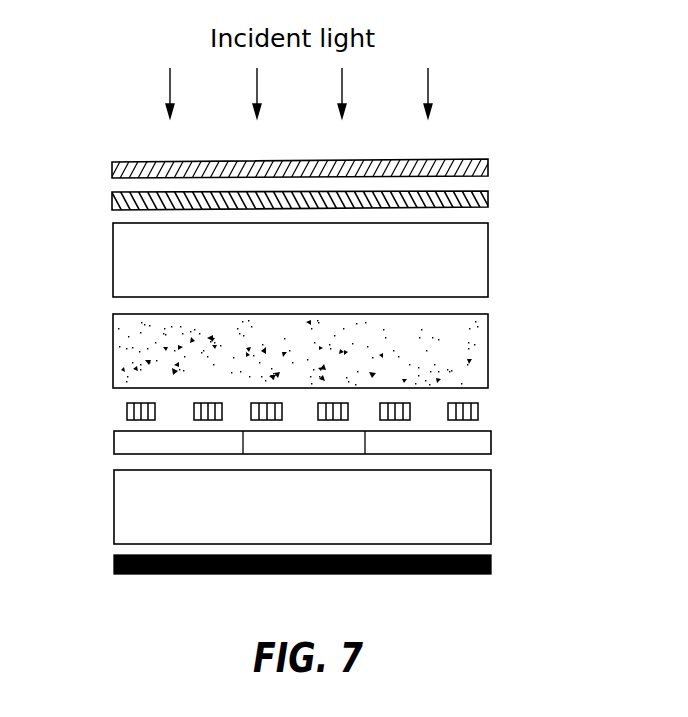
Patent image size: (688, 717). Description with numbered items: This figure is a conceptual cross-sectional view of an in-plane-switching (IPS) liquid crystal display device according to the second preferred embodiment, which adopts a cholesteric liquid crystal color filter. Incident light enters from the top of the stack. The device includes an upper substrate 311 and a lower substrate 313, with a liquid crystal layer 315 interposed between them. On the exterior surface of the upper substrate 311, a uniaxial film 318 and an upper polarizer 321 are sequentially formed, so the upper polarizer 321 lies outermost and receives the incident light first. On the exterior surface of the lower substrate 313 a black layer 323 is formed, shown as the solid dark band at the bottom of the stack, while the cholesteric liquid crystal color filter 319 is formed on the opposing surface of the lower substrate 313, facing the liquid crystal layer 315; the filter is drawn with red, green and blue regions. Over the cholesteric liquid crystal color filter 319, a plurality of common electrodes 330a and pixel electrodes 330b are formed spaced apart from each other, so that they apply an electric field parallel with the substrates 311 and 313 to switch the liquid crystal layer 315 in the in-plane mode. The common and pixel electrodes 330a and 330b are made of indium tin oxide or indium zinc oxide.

The upper polarizer 321 is at (488, 168).
The uniaxial film 318 is at (488, 200).
The upper substrate 311 is at (483, 265).
The liquid crystal layer 315 is at (483, 357).
The pixel electrode 330b is at (194, 405).
The common electrode 330a is at (127, 406).
The cholesteric liquid crystal color filter 319 is at (485, 443).
The lower substrate 313 is at (485, 505).
The black layer 323 is at (490, 556).